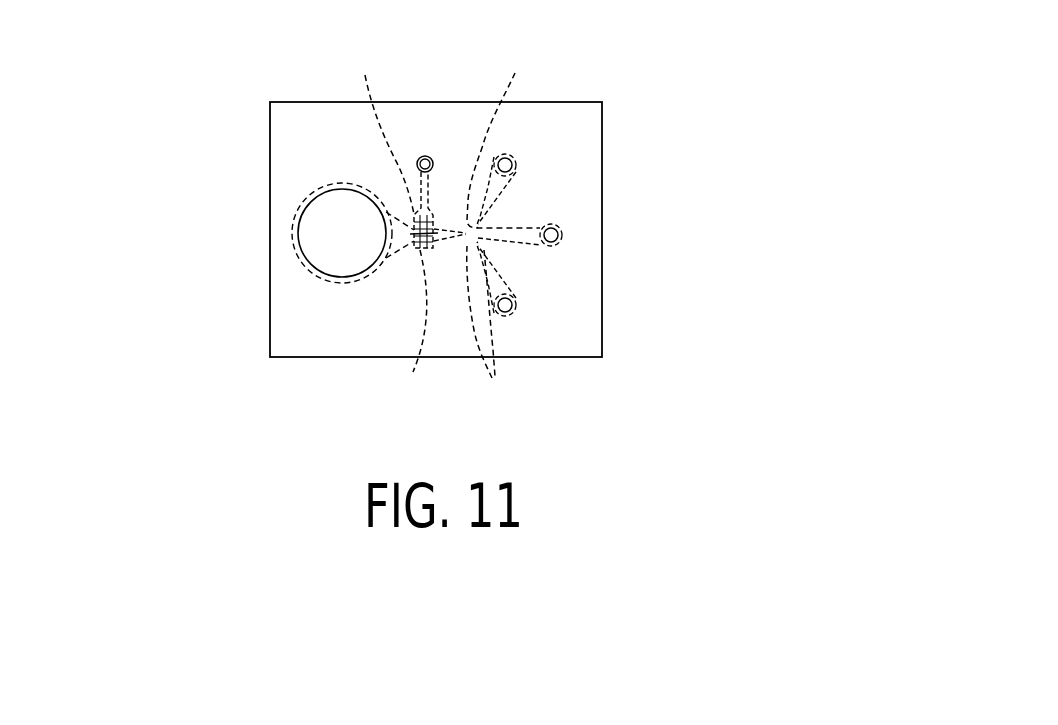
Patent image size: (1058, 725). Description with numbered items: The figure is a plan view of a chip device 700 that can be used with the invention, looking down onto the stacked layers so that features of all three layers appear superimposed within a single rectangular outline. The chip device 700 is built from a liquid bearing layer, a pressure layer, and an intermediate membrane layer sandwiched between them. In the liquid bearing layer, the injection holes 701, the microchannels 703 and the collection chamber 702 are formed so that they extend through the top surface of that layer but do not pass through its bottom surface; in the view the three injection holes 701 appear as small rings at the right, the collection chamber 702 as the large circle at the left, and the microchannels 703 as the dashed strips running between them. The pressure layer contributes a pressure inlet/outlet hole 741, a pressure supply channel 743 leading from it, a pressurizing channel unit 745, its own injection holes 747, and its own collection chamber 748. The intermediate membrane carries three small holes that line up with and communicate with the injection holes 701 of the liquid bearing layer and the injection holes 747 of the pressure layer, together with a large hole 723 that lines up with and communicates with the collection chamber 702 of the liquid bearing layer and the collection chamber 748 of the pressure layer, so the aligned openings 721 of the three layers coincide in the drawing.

The chip device 700 is at (624, 108).
The injection holes 701 is at (512, 165).
The collection chamber 702 is at (311, 199).
The microchannels 703 is at (488, 226).
The connecting portion 721 is at (558, 235).
The large hole 723 is at (255, 233).
The pressure inlet/outlet hole 741 is at (427, 156).
The pressure supply channel 743 is at (378, 127).
The pressurizing channel unit 745 is at (420, 328).
The injection holes 747 is at (512, 305).
The collection chamber 748 is at (306, 242).